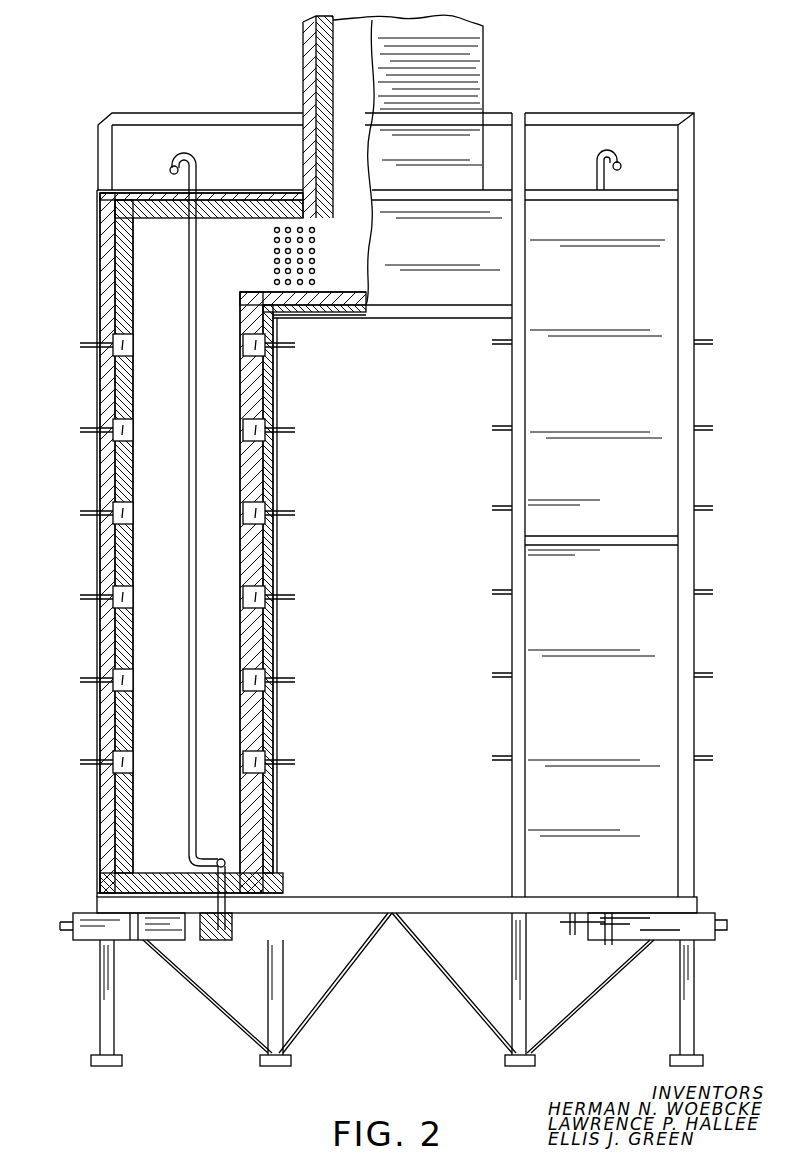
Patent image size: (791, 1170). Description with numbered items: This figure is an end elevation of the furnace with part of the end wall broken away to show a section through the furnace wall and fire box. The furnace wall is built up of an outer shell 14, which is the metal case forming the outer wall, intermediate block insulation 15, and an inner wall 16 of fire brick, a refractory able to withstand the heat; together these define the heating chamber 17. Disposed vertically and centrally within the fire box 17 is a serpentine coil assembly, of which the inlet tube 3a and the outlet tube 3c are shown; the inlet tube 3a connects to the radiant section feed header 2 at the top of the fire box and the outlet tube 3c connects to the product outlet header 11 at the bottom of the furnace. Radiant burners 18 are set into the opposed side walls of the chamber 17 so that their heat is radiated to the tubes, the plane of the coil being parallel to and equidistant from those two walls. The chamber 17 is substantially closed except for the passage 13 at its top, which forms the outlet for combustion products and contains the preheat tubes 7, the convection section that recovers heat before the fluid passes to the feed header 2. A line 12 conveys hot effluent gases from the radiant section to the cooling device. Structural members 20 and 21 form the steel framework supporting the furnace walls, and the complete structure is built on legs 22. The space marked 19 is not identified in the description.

The radiant section feed header 2 is at (170, 169).
The inlet tube 3a is at (189, 254).
The outlet tube 3c is at (190, 863).
The preheat tubes 7 is at (274, 261).
The product outlet header 11 is at (222, 859).
The line 12 is at (73, 930).
The passage 13 is at (474, 80).
The outer shell 14 is at (97, 235).
The block insulation 15 is at (106, 262).
The inner wall 16 is at (126, 283).
The heating chamber 17 is at (144, 306).
The radiant burners 18 is at (133, 347).
The hopper compartment 19 is at (628, 303).
The structural member 20 is at (694, 378).
The structural member 21 is at (639, 538).
The legs 22 is at (694, 1000).